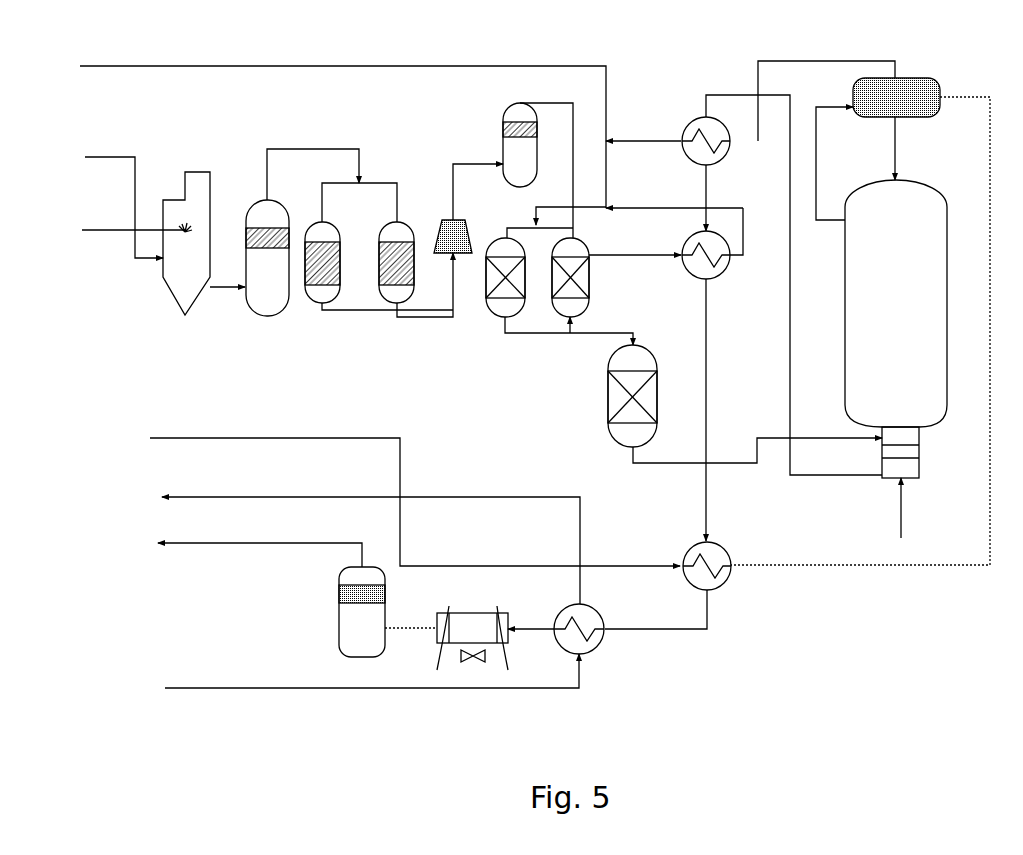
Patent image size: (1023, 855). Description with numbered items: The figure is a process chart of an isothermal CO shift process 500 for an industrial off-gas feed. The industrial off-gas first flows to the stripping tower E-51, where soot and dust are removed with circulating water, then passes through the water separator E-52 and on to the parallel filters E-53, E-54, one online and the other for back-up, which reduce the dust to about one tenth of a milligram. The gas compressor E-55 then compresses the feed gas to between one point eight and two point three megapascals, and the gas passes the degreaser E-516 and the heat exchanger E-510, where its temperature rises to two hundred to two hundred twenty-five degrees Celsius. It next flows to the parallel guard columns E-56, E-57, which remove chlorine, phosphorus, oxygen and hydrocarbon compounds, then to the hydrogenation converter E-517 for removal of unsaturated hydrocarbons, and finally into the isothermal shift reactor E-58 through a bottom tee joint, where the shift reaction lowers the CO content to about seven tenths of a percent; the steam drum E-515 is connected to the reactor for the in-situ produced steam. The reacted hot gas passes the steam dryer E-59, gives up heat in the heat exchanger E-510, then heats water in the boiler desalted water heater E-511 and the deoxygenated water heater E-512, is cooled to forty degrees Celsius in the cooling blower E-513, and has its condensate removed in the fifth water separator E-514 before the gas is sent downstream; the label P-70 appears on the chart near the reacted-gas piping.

The process system 500 is at (63, 79).
The stripping tower E-51 is at (204, 257).
The water separator E-52 is at (321, 245).
The parallel filter E-53 is at (379, 277).
The parallel filter E-54 is at (416, 277).
The compressor E-55 is at (464, 208).
The guard column E-56 is at (558, 292).
The guard column E-57 is at (616, 297).
The isothermal shift reactor E-58 is at (896, 329).
The steam dryer E-59 is at (782, 285).
The heat exchanger E-510 is at (705, 374).
The boiler desalted water heater E-511 is at (668, 583).
The deoxygenated water heater E-512 is at (577, 624).
The cooling blower E-513 is at (446, 647).
The 5th water separator E-514 is at (362, 625).
The steam drum E-515 is at (878, 149).
The degreaser E-516 is at (537, 170).
The hydrogenation converter E-517 is at (740, 408).
The pump P-70 is at (769, 532).